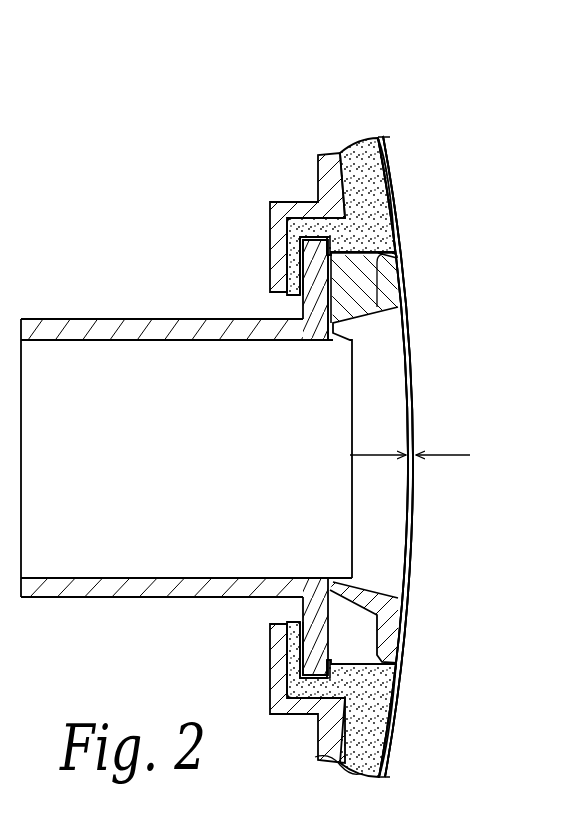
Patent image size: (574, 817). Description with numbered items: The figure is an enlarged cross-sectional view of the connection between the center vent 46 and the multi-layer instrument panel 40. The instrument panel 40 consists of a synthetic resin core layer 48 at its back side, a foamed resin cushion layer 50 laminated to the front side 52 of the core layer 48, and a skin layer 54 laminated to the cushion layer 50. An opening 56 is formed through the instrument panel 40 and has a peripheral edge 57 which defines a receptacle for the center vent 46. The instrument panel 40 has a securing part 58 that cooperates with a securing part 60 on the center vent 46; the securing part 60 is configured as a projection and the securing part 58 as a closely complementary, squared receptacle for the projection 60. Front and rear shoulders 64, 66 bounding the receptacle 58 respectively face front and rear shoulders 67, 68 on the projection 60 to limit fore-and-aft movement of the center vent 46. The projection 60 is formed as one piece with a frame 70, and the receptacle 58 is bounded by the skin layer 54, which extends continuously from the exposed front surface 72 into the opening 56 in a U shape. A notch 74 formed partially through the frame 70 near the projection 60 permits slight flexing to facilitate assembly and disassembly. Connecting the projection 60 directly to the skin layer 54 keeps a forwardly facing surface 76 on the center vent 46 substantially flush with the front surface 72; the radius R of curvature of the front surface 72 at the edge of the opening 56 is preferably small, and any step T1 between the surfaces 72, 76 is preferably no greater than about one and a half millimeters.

The instrument panel 40 is at (388, 128).
The center vent 46 is at (137, 319).
The core layer 48 is at (277, 202).
The cushion layer 50 is at (357, 140).
The front side 52 is at (392, 145).
The skin layer 54 is at (397, 232).
The opening 56 is at (399, 256).
The peripheral edge 57 is at (410, 340).
The securing part 58 is at (300, 292).
The securing part 60 is at (352, 310).
The front shoulder 64 is at (316, 250).
The rear shoulder 66 is at (335, 236).
The front shoulder 67 is at (356, 228).
The rear shoulder 68 is at (305, 262).
The frame 70 is at (150, 341).
The front surface 72 is at (388, 160).
The notch 74 is at (326, 262).
The forwardly facing surface 76 is at (335, 281).
The radius of curvature R is at (402, 255).
The step T1 is at (425, 457).